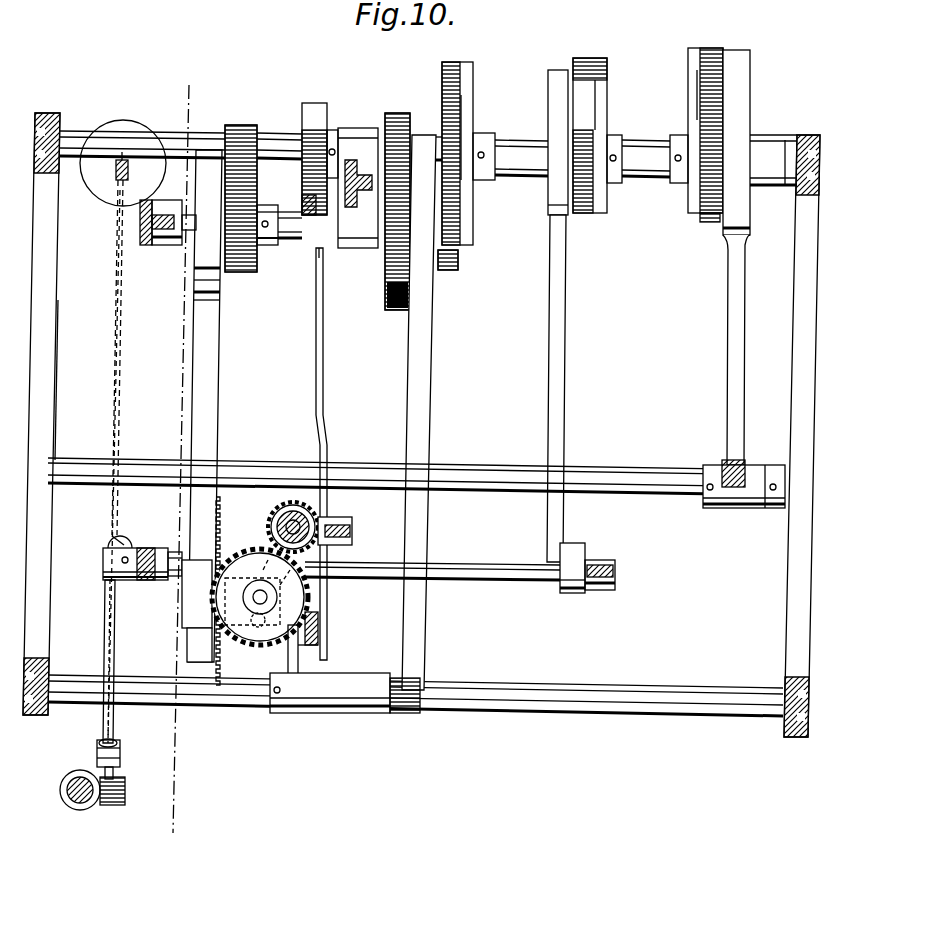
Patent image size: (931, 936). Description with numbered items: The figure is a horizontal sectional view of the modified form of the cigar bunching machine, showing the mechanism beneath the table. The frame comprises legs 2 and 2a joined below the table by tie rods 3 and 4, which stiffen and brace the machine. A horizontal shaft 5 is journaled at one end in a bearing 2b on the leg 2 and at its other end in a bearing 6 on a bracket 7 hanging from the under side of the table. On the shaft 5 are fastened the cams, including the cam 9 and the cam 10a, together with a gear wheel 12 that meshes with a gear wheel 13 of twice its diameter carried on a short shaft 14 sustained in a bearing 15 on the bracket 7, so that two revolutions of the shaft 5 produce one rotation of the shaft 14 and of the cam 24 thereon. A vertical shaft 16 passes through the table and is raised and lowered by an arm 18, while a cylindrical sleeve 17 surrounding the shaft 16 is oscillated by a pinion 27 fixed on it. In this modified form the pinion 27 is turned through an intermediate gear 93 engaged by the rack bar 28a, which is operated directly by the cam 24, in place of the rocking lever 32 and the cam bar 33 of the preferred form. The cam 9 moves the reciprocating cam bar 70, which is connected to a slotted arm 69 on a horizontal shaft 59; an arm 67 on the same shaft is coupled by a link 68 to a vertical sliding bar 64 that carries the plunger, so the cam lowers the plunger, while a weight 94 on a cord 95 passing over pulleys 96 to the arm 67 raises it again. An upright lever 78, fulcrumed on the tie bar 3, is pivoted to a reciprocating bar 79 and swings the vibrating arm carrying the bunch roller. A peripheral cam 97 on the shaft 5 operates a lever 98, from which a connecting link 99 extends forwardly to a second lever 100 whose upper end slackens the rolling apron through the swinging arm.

The leg 2 is at (797, 192).
The leg 2a is at (69, 380).
The bearing 2b is at (788, 142).
The tie rod 3 is at (608, 478).
The tie rod 4 is at (178, 132).
The horizontal shaft 5 is at (307, 130).
The bearing 6 is at (358, 171).
The bracket 7 is at (358, 174).
The cam 9 is at (604, 96).
The cam 10a is at (703, 72).
The gear wheel 12 is at (398, 113).
The gear wheel 13 is at (393, 309).
The short shaft 14 is at (325, 255).
The bearing 15 is at (320, 238).
The vertical shaft 16 is at (277, 527).
The cylindrical sleeve 17 is at (318, 508).
The arm 18 is at (300, 662).
The cam 24 is at (245, 128).
The pinion 27 is at (280, 515).
The rack bar 28a is at (218, 428).
The rocking lever 32 is at (393, 715).
The reciprocating cam bar 33 is at (425, 377).
The horizontal shaft 59 is at (465, 580).
The vertical sliding bar 64 is at (78, 800).
The arm 67 is at (105, 637).
The link 68 is at (125, 785).
The arm 69 is at (571, 552).
The reciprocating cam bar 70 is at (569, 316).
The upright lever 78 is at (722, 462).
The reciprocating bar 79 is at (730, 332).
The intermediate gear 93 is at (232, 635).
The weight 94 is at (103, 188).
The cord 95 is at (115, 362).
The pulleys 96 is at (128, 170).
The peripheral cam 97 is at (315, 108).
The lever 98 is at (292, 240).
The connecting link 99 is at (323, 372).
The lever 100 is at (318, 625).